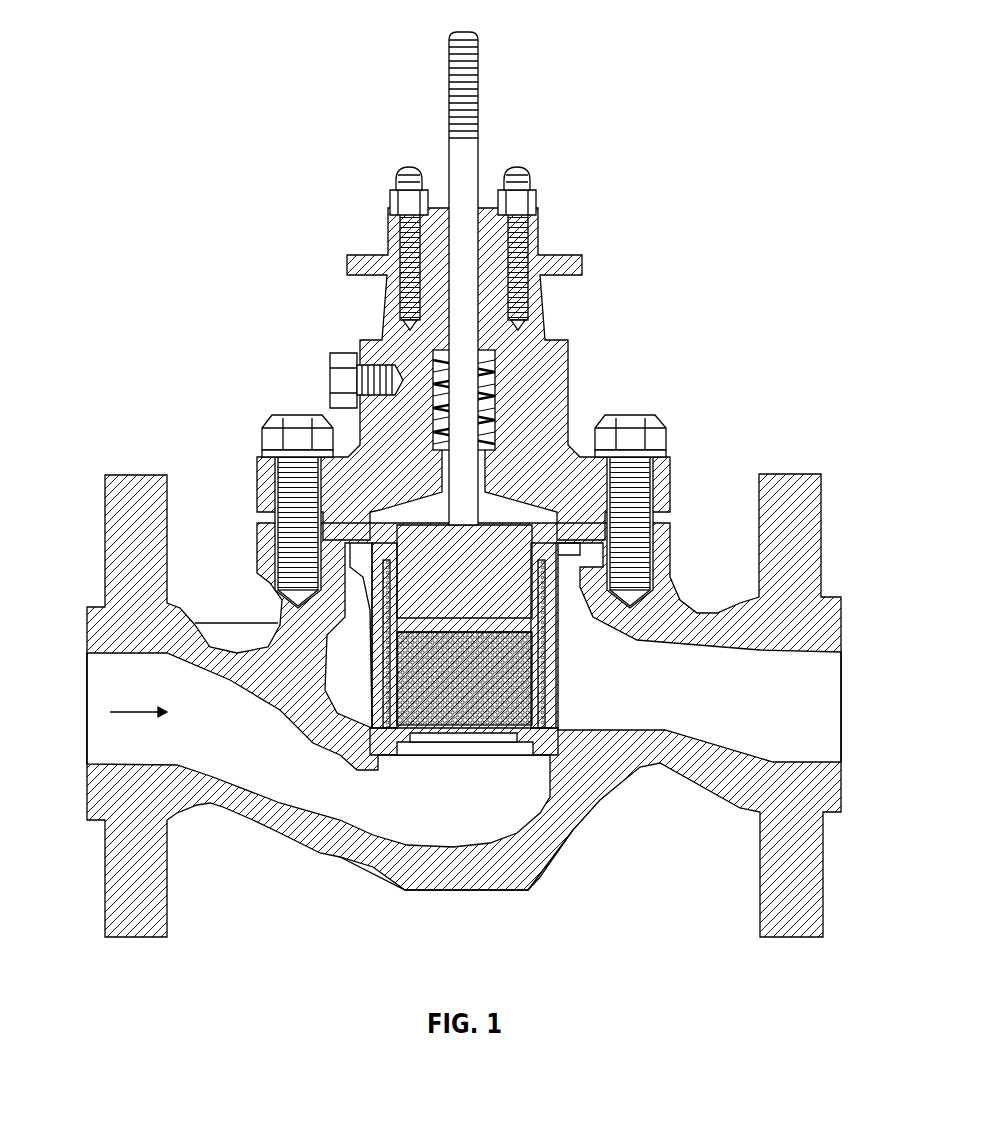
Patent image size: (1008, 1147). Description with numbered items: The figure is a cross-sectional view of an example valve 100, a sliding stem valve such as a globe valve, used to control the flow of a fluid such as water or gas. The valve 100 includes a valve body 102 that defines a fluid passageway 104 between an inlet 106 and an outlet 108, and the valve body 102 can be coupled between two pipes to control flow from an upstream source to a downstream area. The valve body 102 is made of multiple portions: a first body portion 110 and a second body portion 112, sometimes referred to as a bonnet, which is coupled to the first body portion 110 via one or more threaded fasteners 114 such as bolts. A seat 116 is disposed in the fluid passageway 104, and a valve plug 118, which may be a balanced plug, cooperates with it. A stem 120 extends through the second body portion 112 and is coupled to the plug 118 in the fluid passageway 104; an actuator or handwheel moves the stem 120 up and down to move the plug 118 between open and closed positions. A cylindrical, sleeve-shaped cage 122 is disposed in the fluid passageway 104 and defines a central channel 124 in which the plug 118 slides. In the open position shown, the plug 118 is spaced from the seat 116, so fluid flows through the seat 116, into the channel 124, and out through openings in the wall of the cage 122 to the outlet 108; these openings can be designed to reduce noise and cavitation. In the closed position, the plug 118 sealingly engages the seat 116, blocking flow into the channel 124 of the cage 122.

The valve 100 is at (230, 50).
The valve body 102 is at (253, 813).
The fluid passageway 104 is at (423, 820).
The inlet 106 is at (87, 699).
The outlet 108 is at (843, 700).
The first body portion 110 is at (357, 857).
The second body portion 112 is at (392, 325).
The threaded fasteners 114 is at (300, 438).
The seat 116 is at (498, 748).
The valve plug 118 is at (476, 572).
The stem 120 is at (467, 462).
The cage 122 is at (560, 568).
The channel 124 is at (555, 655).